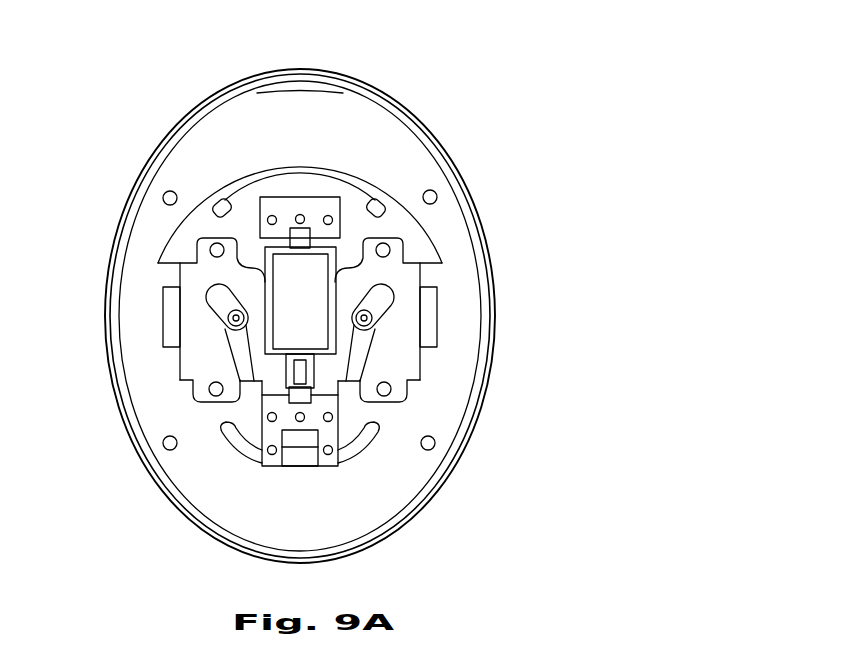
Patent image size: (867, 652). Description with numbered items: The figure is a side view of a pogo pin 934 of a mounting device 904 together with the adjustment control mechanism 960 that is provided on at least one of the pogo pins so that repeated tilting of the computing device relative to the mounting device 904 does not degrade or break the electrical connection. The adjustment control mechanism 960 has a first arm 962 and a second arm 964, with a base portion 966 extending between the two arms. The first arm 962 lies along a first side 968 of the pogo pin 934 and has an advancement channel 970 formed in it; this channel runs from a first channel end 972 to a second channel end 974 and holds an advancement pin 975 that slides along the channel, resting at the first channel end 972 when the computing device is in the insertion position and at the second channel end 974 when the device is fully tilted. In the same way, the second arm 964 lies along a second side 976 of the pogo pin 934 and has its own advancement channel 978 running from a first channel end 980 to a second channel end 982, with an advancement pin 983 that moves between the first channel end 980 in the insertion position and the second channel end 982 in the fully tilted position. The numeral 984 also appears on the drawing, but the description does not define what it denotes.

The mounting device 904 is at (463, 178).
The pogo pin 934 is at (312, 257).
The adjustment control mechanism 960 is at (413, 313).
The first arm 962 is at (220, 340).
The second arm 964 is at (437, 330).
The base portion 966 is at (222, 428).
The first side 968 is at (262, 258).
The advancement channel 970 is at (163, 297).
The first channel end 972 is at (216, 336).
The second channel end 974 is at (222, 290).
The advancement pin 975 is at (228, 318).
The second side 976 is at (378, 201).
The advancement channel 978 is at (383, 282).
The first channel end 980 is at (370, 350).
The second channel end 982 is at (385, 242).
The advancement pin 983 is at (372, 314).
The lower mounting tab 984 is at (240, 456).